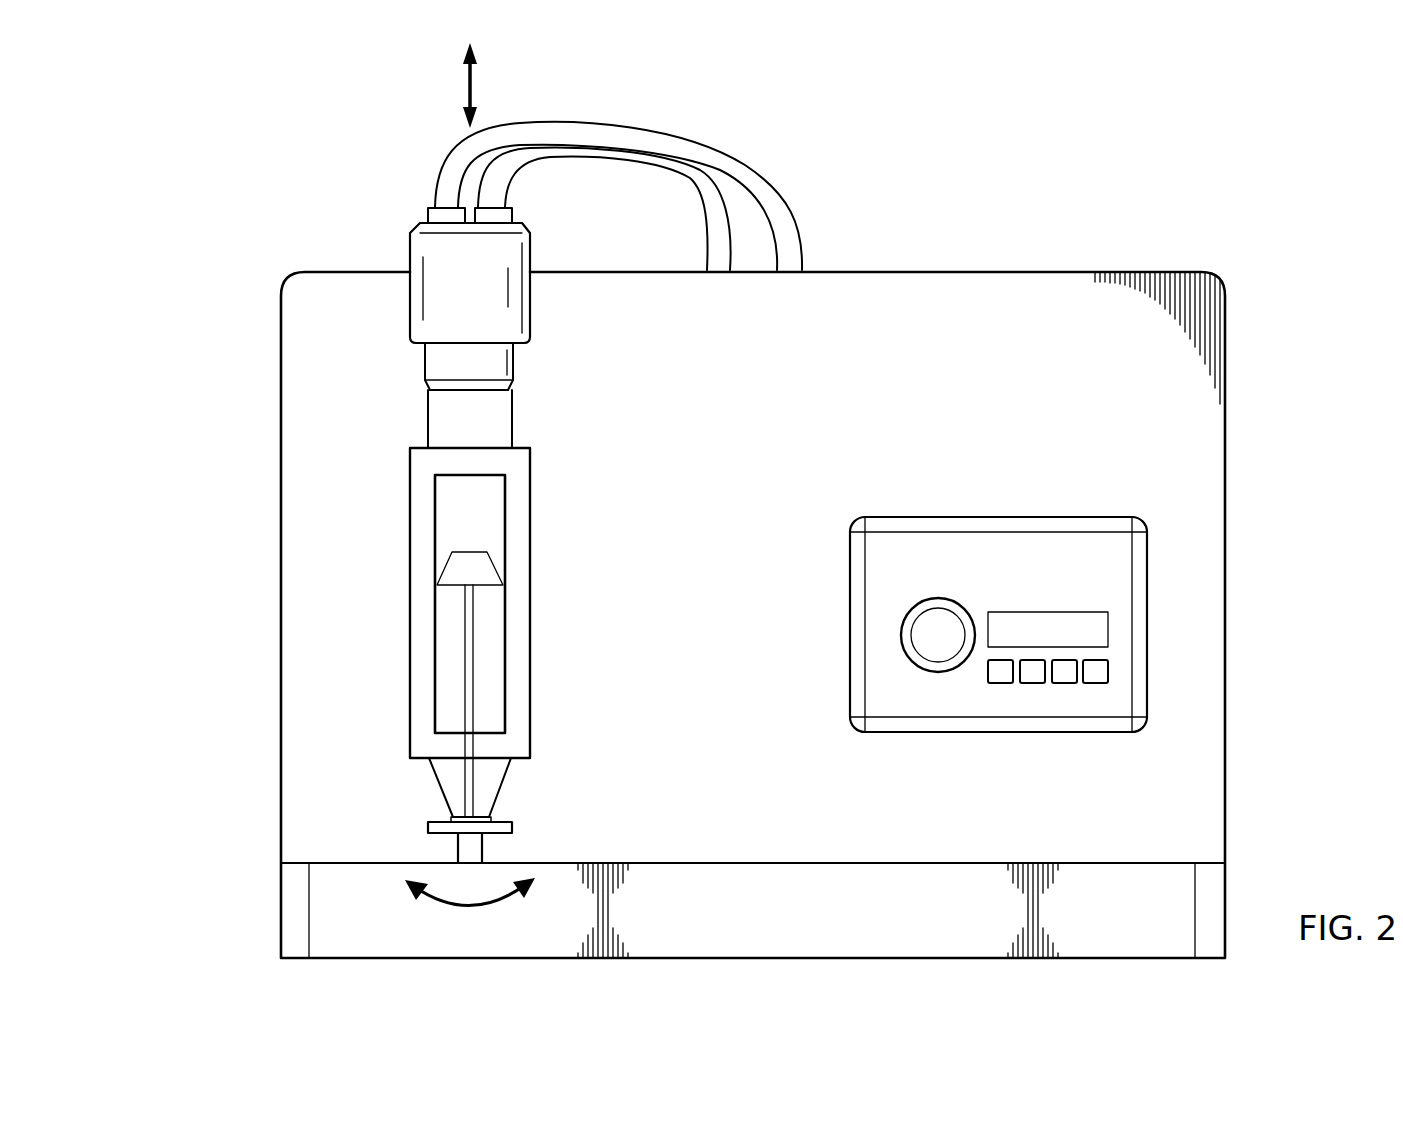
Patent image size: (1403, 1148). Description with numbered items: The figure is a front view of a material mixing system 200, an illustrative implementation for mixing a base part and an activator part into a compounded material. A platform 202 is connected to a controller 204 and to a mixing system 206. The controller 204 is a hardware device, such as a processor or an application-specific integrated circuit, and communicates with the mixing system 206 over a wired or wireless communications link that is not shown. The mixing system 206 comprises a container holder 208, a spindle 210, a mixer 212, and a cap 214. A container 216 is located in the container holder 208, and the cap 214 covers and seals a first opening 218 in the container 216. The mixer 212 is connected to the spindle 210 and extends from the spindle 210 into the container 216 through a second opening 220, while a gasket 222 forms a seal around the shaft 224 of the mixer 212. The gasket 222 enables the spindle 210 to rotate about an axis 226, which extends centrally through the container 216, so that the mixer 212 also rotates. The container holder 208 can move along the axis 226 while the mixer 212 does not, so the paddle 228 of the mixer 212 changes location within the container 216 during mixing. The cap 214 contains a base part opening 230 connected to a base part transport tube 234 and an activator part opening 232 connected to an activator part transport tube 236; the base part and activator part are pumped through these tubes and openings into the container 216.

The material mixing system 200 is at (1004, 175).
The platform 202 is at (1065, 272).
The controller 204 is at (995, 517).
The mixing system 206 is at (246, 582).
The container holder 208 is at (410, 605).
The spindle 210 is at (482, 855).
The mixer 212 is at (428, 828).
The cap 214 is at (410, 318).
The container 216 is at (512, 420).
The first opening 218 is at (430, 391).
The second opening 220 is at (488, 823).
The gasket 222 is at (455, 815).
The shaft 224 is at (465, 657).
The axis 226 is at (467, 90).
The paddle 228 is at (470, 557).
The base part opening 230 is at (428, 215).
The activator part opening 232 is at (512, 217).
The base part transport tube 234 is at (447, 155).
The activator part transport tube 236 is at (723, 143).